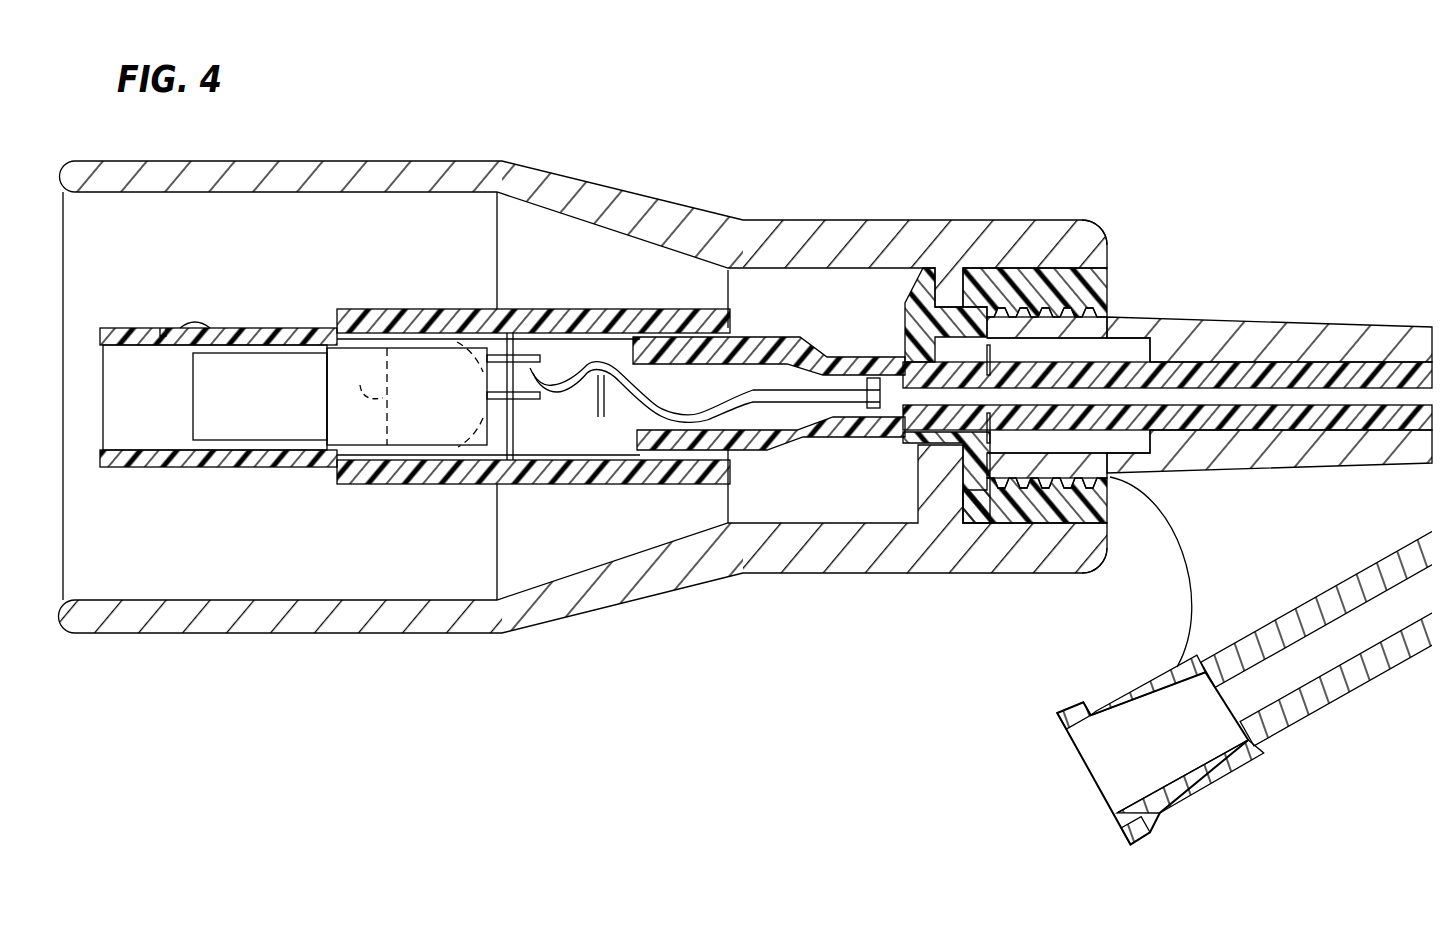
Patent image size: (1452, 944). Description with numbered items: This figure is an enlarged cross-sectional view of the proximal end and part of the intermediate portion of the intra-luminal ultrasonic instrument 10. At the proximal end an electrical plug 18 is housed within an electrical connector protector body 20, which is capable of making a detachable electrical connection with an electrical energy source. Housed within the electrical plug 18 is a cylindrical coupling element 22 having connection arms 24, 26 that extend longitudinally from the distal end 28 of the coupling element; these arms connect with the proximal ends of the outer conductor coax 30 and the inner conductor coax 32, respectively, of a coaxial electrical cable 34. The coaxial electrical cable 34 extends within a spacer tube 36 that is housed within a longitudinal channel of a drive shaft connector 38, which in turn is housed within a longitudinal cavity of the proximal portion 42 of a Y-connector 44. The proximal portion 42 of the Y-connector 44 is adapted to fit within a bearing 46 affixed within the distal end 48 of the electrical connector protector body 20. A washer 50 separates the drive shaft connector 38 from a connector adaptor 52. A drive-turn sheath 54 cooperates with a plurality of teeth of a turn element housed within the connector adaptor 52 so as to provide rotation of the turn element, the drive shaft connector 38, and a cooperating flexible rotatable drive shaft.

The fiber optic connector assembly 10 is at (1240, 180).
The electrical plug 18 is at (108, 328).
The electrical connector protector body 20 is at (340, 161).
The cylindrical coupling element 22 is at (340, 432).
The connection arm 24 is at (502, 350).
The connection arm 26 is at (512, 485).
The distal end of the cylindrical coupling element 28 is at (486, 393).
The outer conductor coax 30 is at (553, 375).
The inner conductor coax 32 is at (553, 390).
The coaxial electrical cable 34 is at (735, 400).
The spacer tube 36 is at (903, 397).
The drive shaft connector 38 is at (1158, 375).
The proximal portion of Y-connector 42 is at (1348, 728).
The Y-connector 44 is at (1357, 343).
The bearing 46 is at (1100, 278).
The distal end of electrical connector protector body 48 is at (1047, 243).
The washer 50 is at (1007, 312).
The connector adaptor 52 is at (847, 363).
The drive-turn sheath 54 is at (758, 440).